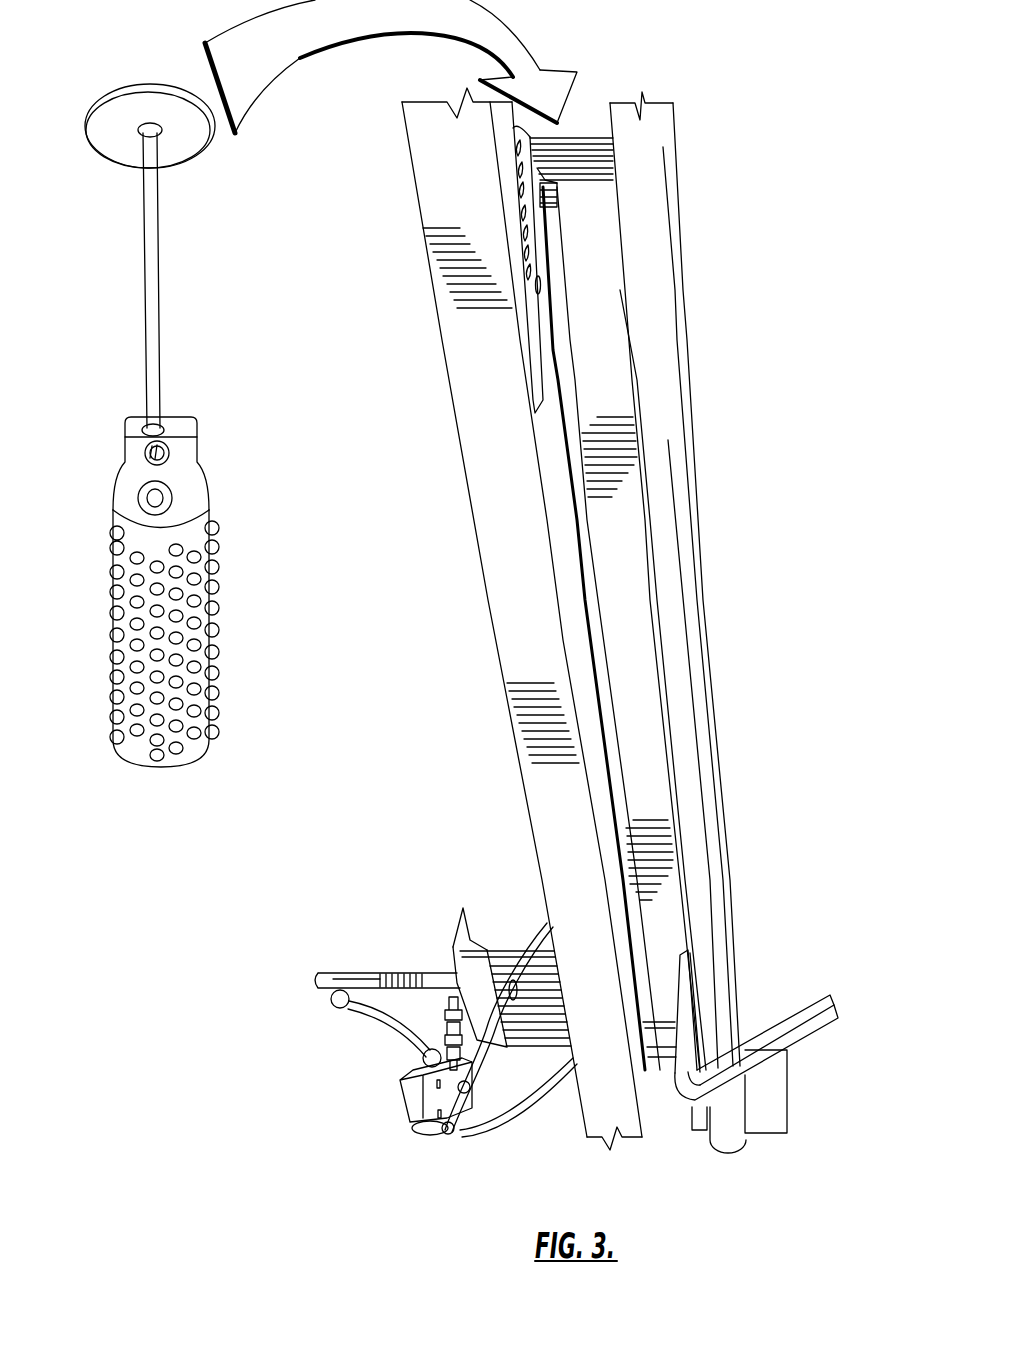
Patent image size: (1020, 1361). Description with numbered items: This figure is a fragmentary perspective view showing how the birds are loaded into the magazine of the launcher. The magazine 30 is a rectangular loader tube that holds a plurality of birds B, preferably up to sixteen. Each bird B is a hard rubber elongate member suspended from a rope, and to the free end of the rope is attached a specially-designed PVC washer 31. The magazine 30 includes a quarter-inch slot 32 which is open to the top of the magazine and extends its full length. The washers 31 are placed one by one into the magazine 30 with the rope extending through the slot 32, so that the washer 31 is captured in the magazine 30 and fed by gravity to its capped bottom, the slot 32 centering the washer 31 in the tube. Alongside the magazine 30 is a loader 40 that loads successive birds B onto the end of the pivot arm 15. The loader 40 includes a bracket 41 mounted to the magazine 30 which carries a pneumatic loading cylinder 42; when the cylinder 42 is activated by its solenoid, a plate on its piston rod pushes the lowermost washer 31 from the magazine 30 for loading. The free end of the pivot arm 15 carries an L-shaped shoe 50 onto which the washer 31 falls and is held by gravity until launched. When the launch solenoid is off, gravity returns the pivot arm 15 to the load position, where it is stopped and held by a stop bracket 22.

The PVC washer 31 is at (107, 128).
The bird B is at (137, 548).
The magazine 30 is at (500, 588).
The slot 32 is at (560, 275).
The pivot arm 15 is at (722, 972).
The stop bracket 22 is at (795, 1053).
The L-shaped shoe 50 is at (767, 1127).
The loader 40 is at (446, 988).
The bracket 41 is at (484, 983).
The pneumatic loading cylinder 42 is at (427, 983).